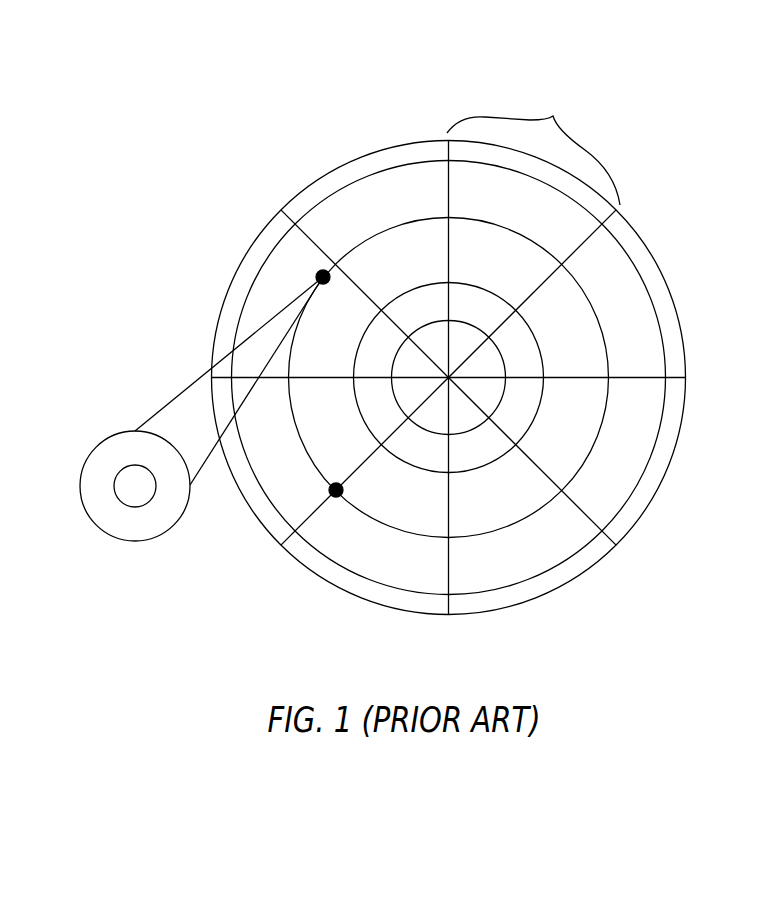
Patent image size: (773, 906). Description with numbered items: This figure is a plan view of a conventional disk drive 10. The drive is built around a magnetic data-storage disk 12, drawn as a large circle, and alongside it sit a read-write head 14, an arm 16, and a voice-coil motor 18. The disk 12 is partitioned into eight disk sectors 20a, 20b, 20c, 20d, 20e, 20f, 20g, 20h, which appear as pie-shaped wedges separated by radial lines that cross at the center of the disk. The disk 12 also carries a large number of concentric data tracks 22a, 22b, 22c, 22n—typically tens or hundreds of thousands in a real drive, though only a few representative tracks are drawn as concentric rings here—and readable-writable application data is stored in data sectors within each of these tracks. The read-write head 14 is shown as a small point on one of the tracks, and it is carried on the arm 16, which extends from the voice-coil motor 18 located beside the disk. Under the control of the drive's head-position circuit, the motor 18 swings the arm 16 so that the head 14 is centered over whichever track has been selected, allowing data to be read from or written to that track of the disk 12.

The disk drive 10 is at (100, 663).
The magnetic data-storage disk 12 is at (683, 315).
The read-write head 14 is at (318, 276).
The arm 16 is at (201, 374).
The voice-coil motor 18 is at (112, 440).
The disk sector 20a is at (533, 149).
The disk sector 20b is at (675, 266).
The disk sector 20c is at (677, 485).
The disk sector 20d is at (548, 609).
The disk sector 20e is at (356, 612).
The disk sector 20f is at (239, 528).
The disk sector 20g is at (227, 272).
The disk sector 20h is at (352, 149).
The concentric data track 22a is at (514, 371).
The concentric data track 22b is at (549, 342).
The concentric data track 22c is at (608, 442).
The concentric data track 22n is at (683, 421).